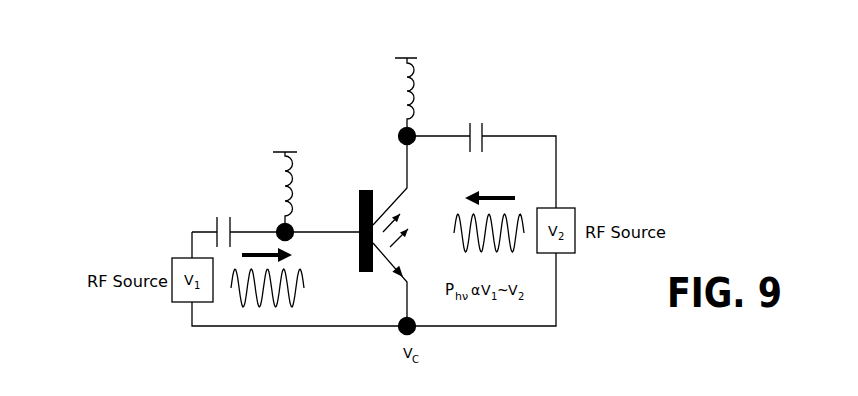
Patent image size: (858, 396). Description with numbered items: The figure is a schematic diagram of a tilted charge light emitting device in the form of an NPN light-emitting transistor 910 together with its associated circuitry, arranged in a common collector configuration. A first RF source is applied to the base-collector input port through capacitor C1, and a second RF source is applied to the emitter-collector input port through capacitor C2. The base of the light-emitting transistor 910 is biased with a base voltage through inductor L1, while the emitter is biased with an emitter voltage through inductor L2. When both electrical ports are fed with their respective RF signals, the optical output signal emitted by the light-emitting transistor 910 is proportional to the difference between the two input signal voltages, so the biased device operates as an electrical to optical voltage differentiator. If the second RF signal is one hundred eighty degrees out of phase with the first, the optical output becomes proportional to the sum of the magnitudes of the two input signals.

The light-emitting transistor 910 is at (356, 188).
The inductor L1 is at (280, 182).
The inductor L2 is at (418, 82).
The capacitor C1 is at (215, 222).
The capacitor C2 is at (487, 130).